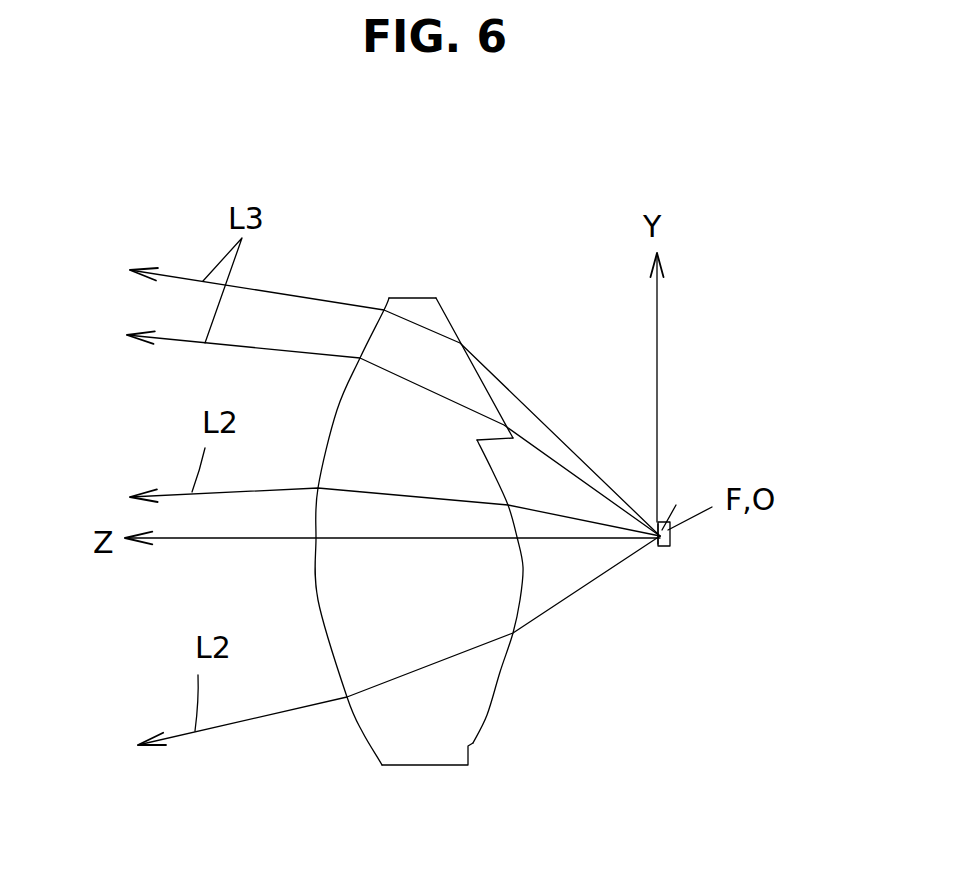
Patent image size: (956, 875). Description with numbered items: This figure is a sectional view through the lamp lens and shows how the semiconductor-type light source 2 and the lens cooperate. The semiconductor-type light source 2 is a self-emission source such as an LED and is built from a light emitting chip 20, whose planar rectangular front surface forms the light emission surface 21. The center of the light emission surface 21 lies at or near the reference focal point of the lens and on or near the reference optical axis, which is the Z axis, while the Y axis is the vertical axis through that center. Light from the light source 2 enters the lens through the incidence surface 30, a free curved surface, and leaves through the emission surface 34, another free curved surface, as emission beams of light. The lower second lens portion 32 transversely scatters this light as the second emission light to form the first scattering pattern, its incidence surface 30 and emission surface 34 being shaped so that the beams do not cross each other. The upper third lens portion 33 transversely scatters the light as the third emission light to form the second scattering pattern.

The semiconductor-type light source 2 is at (678, 502).
The light emitting chip 20 is at (670, 545).
The light emission surface 21 is at (655, 547).
The incidence surface 30 is at (450, 320).
The second lens portion 32 is at (362, 732).
The third lens portion 33 is at (388, 307).
The emission surface 34 is at (365, 509).